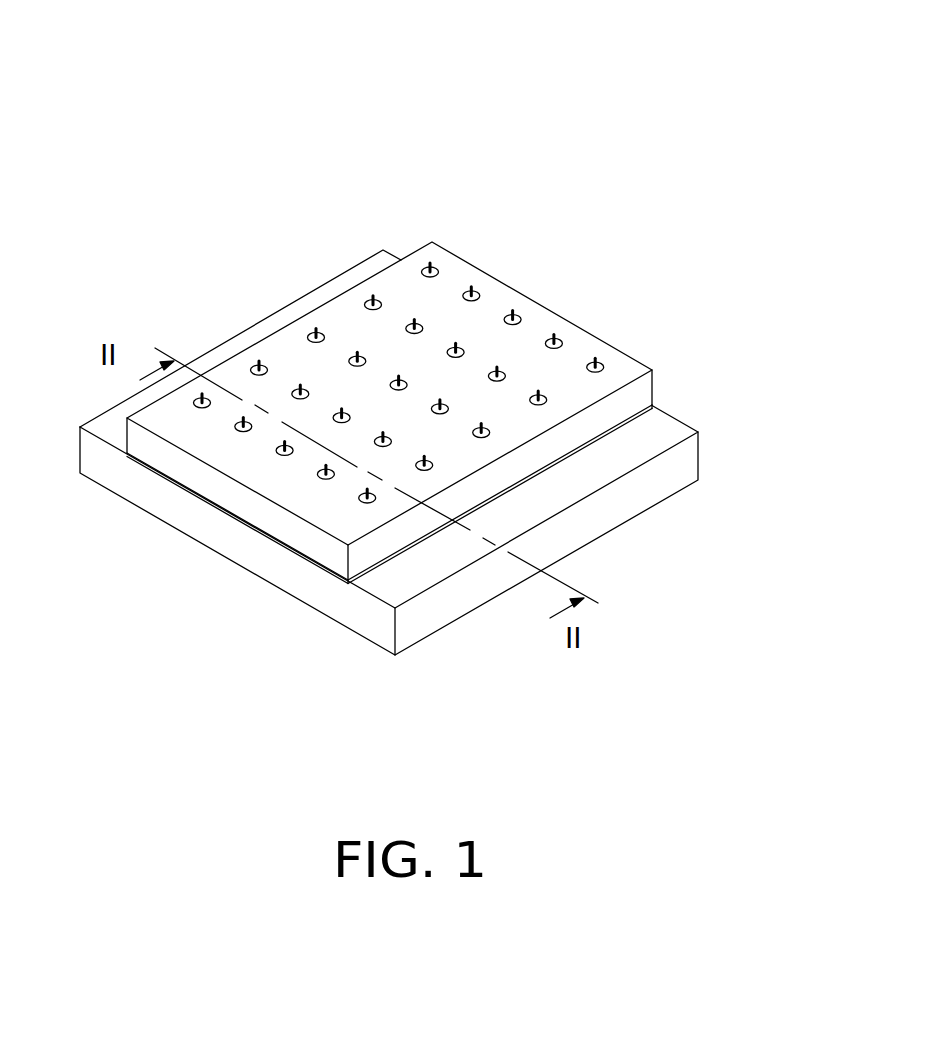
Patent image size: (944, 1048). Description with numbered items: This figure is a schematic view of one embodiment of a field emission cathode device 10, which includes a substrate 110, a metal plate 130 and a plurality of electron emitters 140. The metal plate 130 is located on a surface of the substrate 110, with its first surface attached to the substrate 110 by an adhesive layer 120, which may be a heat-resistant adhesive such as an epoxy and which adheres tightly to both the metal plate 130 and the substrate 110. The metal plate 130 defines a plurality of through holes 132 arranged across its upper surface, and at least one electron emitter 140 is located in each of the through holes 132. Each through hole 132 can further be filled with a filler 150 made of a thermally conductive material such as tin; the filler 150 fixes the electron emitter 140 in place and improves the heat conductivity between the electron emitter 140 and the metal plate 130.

The field emission cathode device 10 is at (483, 78).
The substrate 110 is at (680, 468).
The adhesive layer 120 is at (655, 406).
The metal plate 130 is at (637, 394).
The through hole 132 is at (559, 335).
The electron emitter 140 is at (375, 299).
The filler 150 is at (366, 300).